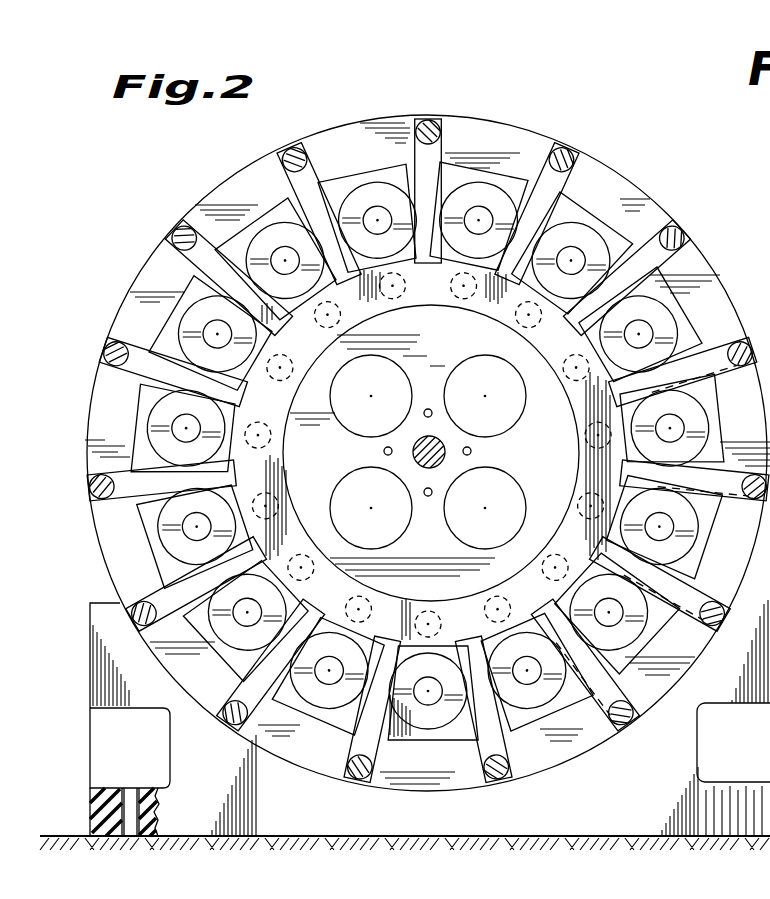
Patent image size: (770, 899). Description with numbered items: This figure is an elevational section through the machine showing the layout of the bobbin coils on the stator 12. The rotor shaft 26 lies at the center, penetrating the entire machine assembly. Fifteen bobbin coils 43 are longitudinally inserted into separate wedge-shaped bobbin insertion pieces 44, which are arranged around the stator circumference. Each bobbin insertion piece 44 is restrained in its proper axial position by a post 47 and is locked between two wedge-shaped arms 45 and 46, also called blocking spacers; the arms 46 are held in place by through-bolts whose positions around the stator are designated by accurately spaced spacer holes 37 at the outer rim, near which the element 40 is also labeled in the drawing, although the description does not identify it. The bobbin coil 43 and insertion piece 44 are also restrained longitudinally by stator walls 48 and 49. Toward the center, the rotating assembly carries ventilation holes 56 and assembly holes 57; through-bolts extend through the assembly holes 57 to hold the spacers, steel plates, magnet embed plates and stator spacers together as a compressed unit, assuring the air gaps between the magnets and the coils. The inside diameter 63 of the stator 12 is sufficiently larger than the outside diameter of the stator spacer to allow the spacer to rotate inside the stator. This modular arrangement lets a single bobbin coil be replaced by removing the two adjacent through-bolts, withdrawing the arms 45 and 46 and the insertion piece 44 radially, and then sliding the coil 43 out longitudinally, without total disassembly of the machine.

The stator 12 is at (657, 184).
The rotor shaft 26 is at (430, 469).
The spacer holes 37 is at (428, 122).
The clamping bar 40 is at (444, 140).
The bobbin coil 43 is at (484, 192).
The bobbin insertion piece 44 is at (516, 183).
The arm 45 is at (728, 333).
The arm 46 is at (741, 490).
The post 47 is at (467, 297).
The stator wall 48 is at (345, 160).
The stator wall 49 is at (366, 102).
The ventilation holes 56 is at (522, 402).
The assembly holes 57 is at (471, 452).
The inside diameter 63 is at (287, 490).